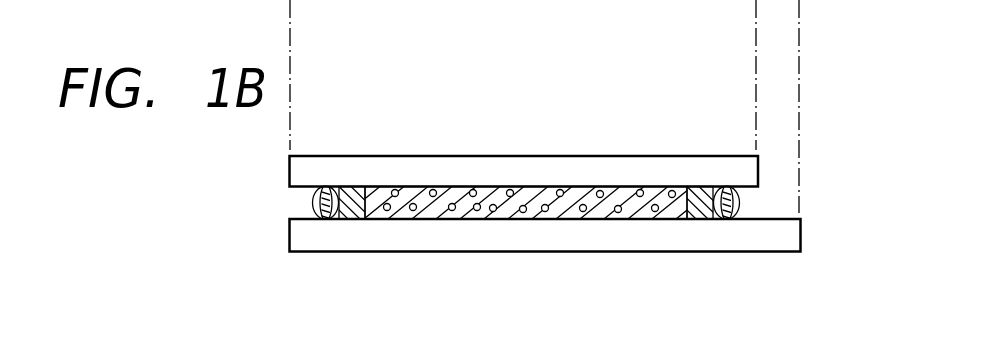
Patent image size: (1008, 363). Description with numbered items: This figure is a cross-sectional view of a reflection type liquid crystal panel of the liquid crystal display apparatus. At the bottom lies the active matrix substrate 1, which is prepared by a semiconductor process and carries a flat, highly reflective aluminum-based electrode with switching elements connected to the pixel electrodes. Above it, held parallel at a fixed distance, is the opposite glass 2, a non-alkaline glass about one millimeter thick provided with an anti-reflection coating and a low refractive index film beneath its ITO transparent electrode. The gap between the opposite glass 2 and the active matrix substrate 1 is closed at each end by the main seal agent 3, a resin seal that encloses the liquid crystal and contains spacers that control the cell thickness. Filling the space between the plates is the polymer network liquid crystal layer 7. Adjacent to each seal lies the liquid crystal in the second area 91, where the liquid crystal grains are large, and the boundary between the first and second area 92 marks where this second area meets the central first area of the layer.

The active matrix substrate 1 is at (782, 242).
The opposite glass 2 is at (647, 170).
The main seal agent 3 is at (283, 242).
The polymer network liquid crystal layer 7 is at (547, 215).
The liquid crystal in the second area 91 is at (352, 198).
The boundary between the first and second area 92 is at (692, 198).